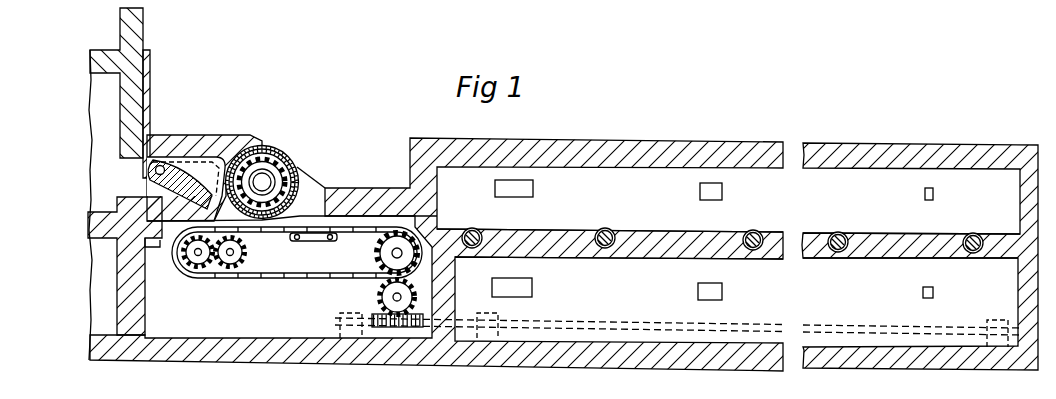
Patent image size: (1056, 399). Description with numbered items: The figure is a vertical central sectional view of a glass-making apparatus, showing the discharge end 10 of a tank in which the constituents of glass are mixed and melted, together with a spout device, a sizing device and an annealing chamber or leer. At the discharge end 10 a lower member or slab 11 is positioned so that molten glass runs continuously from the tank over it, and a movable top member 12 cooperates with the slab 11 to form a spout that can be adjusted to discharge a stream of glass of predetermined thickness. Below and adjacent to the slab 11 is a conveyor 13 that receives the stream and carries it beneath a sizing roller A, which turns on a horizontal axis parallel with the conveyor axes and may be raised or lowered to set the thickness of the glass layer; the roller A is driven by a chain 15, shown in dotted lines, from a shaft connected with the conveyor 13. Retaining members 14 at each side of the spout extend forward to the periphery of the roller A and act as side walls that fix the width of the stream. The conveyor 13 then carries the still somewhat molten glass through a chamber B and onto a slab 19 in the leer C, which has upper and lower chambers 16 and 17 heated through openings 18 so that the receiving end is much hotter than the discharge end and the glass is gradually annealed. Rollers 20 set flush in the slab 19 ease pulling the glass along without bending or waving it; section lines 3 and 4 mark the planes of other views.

The discharge end of tank 10 is at (103, 105).
The slab 11 is at (117, 206).
The movable top member 12 is at (161, 165).
The conveyor 13 is at (261, 279).
The retaining member 14 is at (198, 165).
The chain 15 is at (256, 236).
The upper chamber 16 is at (436, 254).
The lower chamber 17 is at (686, 256).
The openings 18 is at (533, 186).
The slab 19 is at (553, 229).
The rollers 20 is at (471, 228).
The section line 3- 3 is at (262, 112).
The section line 4- 4 is at (650, 398).
The sizing roller A is at (283, 154).
The chamber B is at (169, 306).
The leer C is at (761, 259).